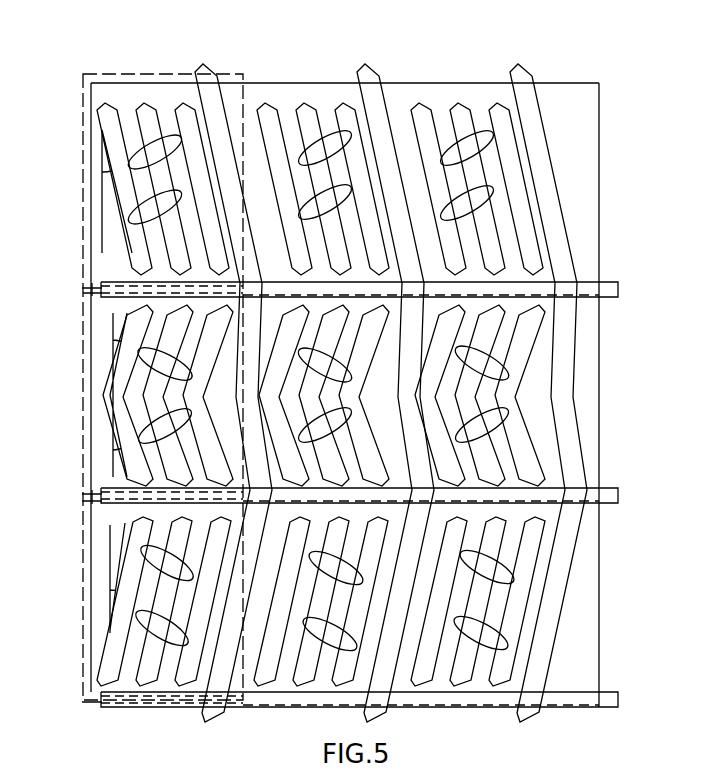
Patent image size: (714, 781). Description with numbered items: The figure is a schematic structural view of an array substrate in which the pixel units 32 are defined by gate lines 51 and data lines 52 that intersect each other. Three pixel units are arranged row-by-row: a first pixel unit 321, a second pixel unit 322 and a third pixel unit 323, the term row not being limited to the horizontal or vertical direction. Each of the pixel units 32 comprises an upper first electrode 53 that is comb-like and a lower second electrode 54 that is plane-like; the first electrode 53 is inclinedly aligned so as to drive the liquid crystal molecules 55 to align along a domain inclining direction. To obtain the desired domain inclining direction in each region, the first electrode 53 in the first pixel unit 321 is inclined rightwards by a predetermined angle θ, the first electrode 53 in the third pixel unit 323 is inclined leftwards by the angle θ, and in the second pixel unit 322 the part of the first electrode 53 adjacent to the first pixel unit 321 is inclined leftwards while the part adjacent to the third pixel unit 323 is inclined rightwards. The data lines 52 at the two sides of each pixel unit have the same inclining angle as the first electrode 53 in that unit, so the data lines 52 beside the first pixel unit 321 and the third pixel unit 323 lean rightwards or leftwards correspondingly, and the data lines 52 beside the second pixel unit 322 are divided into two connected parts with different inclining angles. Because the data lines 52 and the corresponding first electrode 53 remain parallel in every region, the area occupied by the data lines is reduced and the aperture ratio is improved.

The pixel unit 32 is at (162, 73).
The first pixel unit 321 is at (82, 107).
The second pixel unit 322 is at (82, 320).
The third pixel unit 323 is at (82, 535).
The gate line 51 is at (608, 288).
The data line 52 is at (525, 78).
The first electrode 53 is at (420, 115).
The second electrode 54 is at (482, 95).
The liquid crystal molecule 55 is at (337, 145).